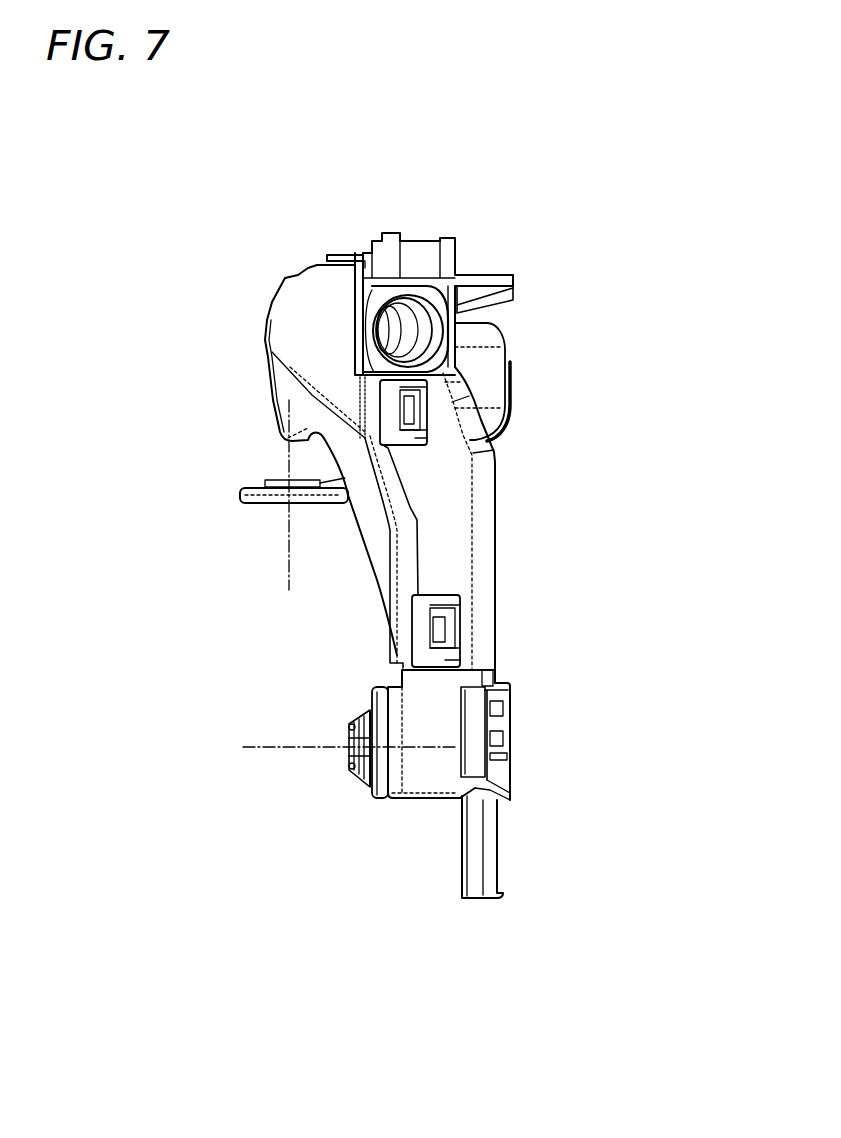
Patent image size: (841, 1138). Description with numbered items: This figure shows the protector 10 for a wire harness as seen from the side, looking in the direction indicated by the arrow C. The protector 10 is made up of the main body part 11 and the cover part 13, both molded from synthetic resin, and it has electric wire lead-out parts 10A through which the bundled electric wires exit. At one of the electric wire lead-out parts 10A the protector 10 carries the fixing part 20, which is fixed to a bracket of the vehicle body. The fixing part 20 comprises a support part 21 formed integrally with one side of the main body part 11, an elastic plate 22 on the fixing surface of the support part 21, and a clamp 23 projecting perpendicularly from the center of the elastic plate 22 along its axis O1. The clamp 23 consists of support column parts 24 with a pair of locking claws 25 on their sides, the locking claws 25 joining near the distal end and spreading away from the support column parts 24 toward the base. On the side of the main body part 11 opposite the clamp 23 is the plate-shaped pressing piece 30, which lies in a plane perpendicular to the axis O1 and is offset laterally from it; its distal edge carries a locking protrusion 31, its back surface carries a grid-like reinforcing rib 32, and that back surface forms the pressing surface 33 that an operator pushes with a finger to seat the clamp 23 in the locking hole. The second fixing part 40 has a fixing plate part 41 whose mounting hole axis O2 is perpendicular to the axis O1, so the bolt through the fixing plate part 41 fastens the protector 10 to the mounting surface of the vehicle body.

The protector 10 is at (395, 403).
The electric wire lead-out part 10A is at (445, 310).
The main body part 11 is at (500, 488).
The cover part 13 is at (366, 538).
The fixing part 20 is at (349, 826).
The support part 21 is at (412, 787).
The elastic plate 22 is at (362, 783).
The clamp 23 is at (350, 763).
The support column part 24 is at (349, 729).
The locking claw 25 is at (358, 720).
The pressing piece 30 is at (515, 795).
The locking protrusion 31 is at (500, 677).
The reinforcing rib 32 is at (499, 698).
The pressing surface 33 is at (493, 755).
The fixing part 40 is at (249, 469).
The fixing plate part 41 is at (250, 505).
The axis of the clamp O1 is at (262, 748).
The axis of the mounting hole O2 is at (287, 557).
The viewing direction C is at (605, 552).